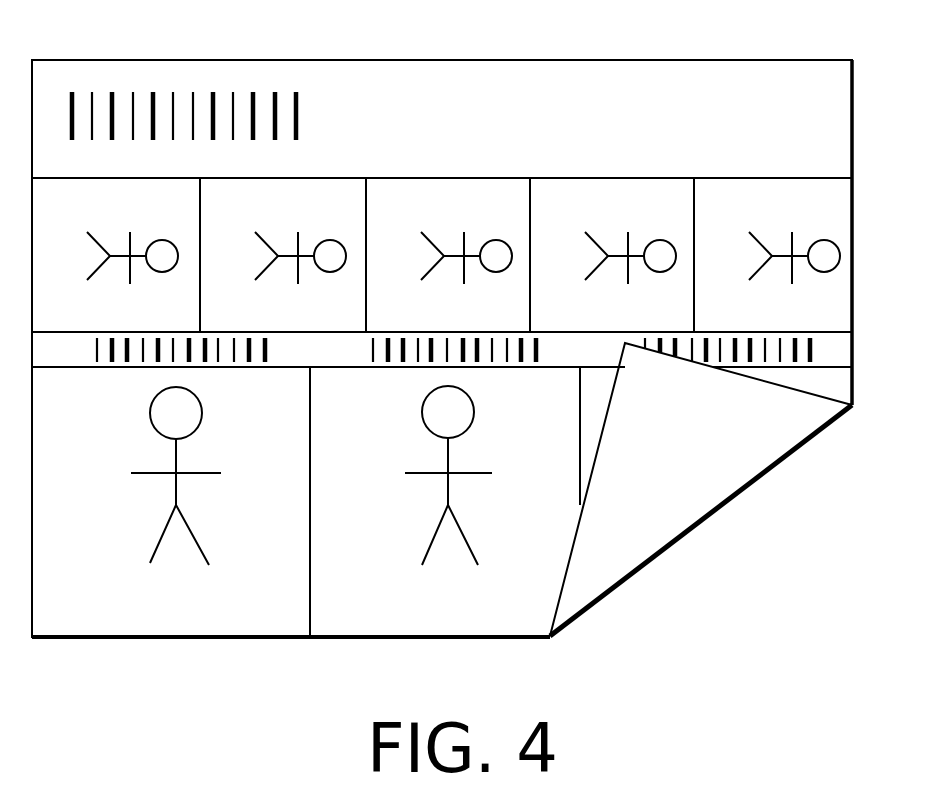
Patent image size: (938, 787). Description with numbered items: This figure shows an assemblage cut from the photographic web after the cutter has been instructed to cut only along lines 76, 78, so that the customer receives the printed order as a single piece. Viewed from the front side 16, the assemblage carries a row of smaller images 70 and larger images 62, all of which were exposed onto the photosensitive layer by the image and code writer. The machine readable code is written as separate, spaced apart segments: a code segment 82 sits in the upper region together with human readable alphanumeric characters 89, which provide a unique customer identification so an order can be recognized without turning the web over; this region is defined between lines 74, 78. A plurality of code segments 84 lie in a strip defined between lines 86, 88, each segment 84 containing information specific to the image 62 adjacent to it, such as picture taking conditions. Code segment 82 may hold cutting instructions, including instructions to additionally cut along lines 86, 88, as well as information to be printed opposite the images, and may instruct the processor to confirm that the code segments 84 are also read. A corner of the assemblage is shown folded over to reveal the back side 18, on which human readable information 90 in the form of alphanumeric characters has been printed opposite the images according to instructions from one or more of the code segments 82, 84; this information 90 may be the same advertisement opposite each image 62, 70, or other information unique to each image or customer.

The cutting line 78 is at (468, 60).
The front side 16 is at (476, 107).
The code segment 82 is at (303, 122).
The human readable alphanumeric characters 89 is at (612, 123).
The cutting line 74 is at (419, 178).
The images 70 is at (154, 192).
The cutting line 88 is at (425, 332).
The code segments 84 is at (816, 350).
The cutting line 86 is at (556, 368).
The cutting line 76 is at (518, 640).
The images 62 is at (333, 620).
The back side 18 is at (657, 404).
The human readable information 90 is at (712, 449).